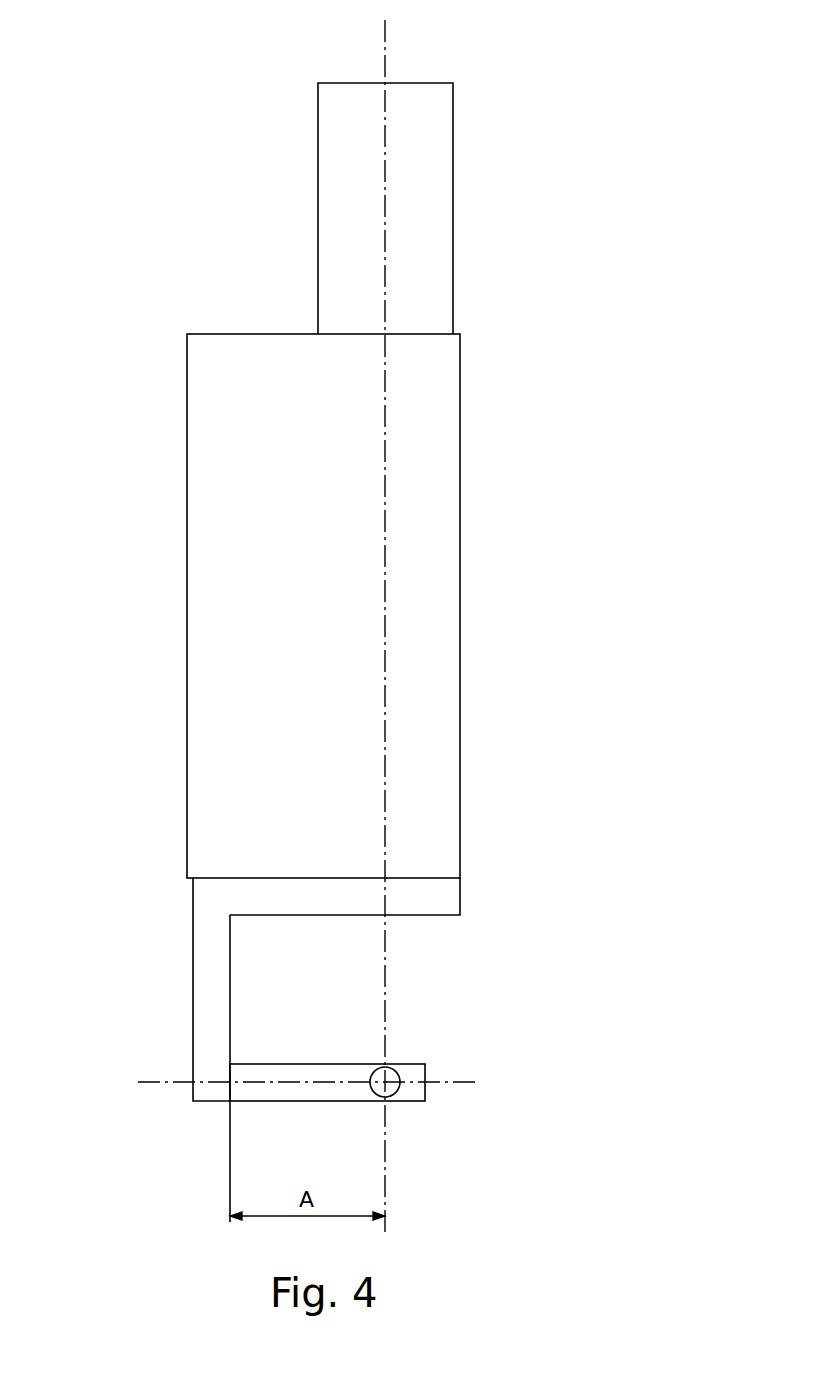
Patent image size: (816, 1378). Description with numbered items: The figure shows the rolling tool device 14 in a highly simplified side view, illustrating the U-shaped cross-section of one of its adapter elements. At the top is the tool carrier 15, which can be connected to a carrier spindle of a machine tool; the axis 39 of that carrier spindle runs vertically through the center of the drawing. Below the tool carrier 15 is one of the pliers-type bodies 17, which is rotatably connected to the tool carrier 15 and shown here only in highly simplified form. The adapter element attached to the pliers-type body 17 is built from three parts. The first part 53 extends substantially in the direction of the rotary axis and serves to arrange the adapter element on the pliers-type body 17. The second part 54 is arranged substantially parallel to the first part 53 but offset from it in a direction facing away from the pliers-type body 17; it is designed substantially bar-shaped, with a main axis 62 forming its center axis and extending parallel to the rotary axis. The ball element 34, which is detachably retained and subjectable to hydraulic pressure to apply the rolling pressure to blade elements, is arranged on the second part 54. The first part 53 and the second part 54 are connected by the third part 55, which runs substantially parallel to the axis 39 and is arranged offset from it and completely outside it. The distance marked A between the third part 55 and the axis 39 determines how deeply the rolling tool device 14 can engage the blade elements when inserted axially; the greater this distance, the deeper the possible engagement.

The rolling tool 14 is at (108, 266).
The tool carrier 15 is at (432, 222).
The pliers-type body 17 is at (206, 603).
The axis 39 is at (387, 50).
The first part 53 is at (440, 896).
The second part 54 is at (314, 1093).
The third part 55 is at (210, 992).
The main axis 62 is at (173, 1083).
The ball element 34 is at (400, 1080).